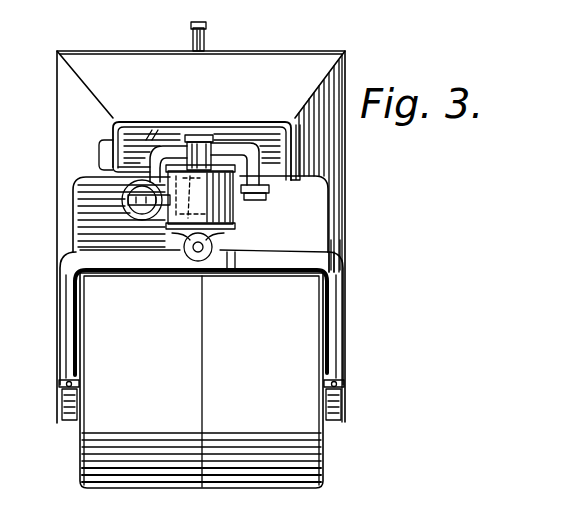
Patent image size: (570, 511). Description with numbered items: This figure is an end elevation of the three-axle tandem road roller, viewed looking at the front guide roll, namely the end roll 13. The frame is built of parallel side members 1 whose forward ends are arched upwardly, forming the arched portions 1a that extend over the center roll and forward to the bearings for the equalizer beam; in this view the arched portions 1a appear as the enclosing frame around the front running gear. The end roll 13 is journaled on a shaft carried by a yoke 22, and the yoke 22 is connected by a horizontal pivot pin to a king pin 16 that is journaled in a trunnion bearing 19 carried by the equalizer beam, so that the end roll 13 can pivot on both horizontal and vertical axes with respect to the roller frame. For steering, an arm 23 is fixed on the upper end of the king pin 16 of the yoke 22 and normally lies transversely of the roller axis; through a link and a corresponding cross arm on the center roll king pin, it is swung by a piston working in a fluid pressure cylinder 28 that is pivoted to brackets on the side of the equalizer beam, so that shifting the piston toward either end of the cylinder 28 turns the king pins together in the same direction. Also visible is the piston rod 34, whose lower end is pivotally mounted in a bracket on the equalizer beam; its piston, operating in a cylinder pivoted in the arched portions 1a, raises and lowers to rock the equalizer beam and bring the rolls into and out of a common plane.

The side member 1 is at (57, 152).
The arched portion 1a is at (335, 155).
The end roll 13 is at (323, 461).
The king pin 16 is at (216, 140).
The trunnion bearing 19 is at (231, 208).
The yoke 22 is at (340, 305).
The arm 23 is at (269, 188).
The fluid pressure cylinder 28 is at (130, 206).
The piston rod 34 is at (205, 33).